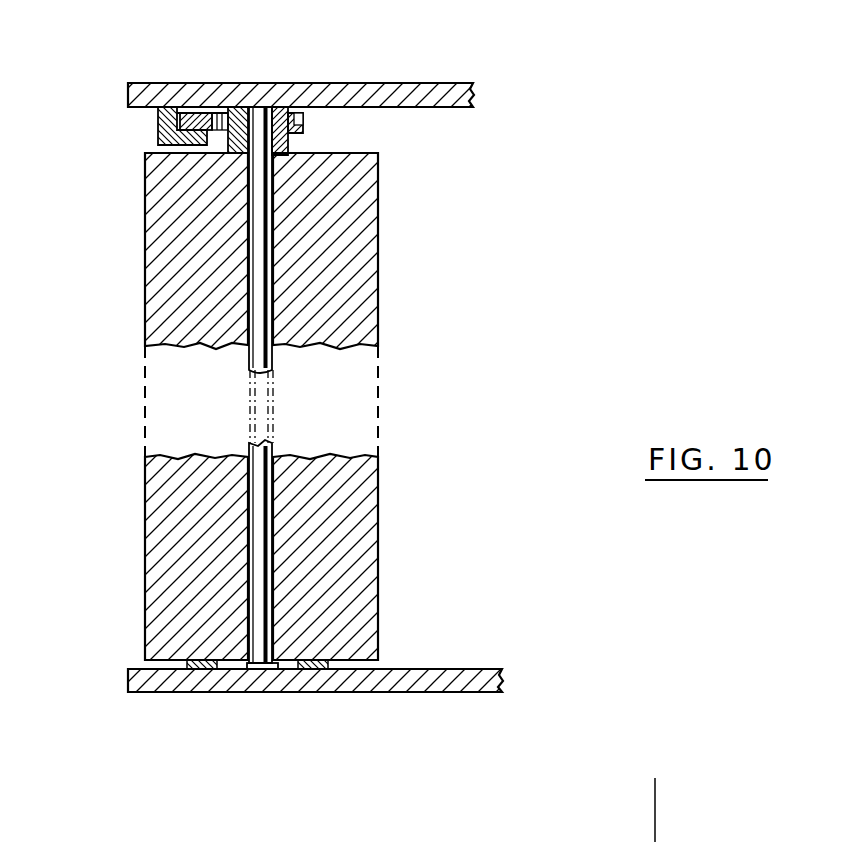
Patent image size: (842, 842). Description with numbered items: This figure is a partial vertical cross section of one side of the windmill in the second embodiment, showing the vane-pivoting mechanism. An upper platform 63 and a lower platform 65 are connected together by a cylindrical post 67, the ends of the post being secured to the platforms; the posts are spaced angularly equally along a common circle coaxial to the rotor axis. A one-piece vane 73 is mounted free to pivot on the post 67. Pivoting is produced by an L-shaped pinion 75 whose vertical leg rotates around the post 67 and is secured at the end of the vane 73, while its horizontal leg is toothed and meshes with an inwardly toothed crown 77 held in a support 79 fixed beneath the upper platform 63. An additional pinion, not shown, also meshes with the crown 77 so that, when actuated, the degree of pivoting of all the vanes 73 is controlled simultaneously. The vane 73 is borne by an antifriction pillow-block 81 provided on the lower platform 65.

The upper platform 63 is at (417, 83).
The lower platform 65 is at (457, 672).
The cylindrical post 67 is at (262, 490).
The vane 73 is at (378, 316).
The L-shaped pinion 75 is at (303, 125).
The inwardly toothed crown 77 is at (199, 128).
The support 79 is at (158, 127).
The antifriction pillow-block 81 is at (200, 668).